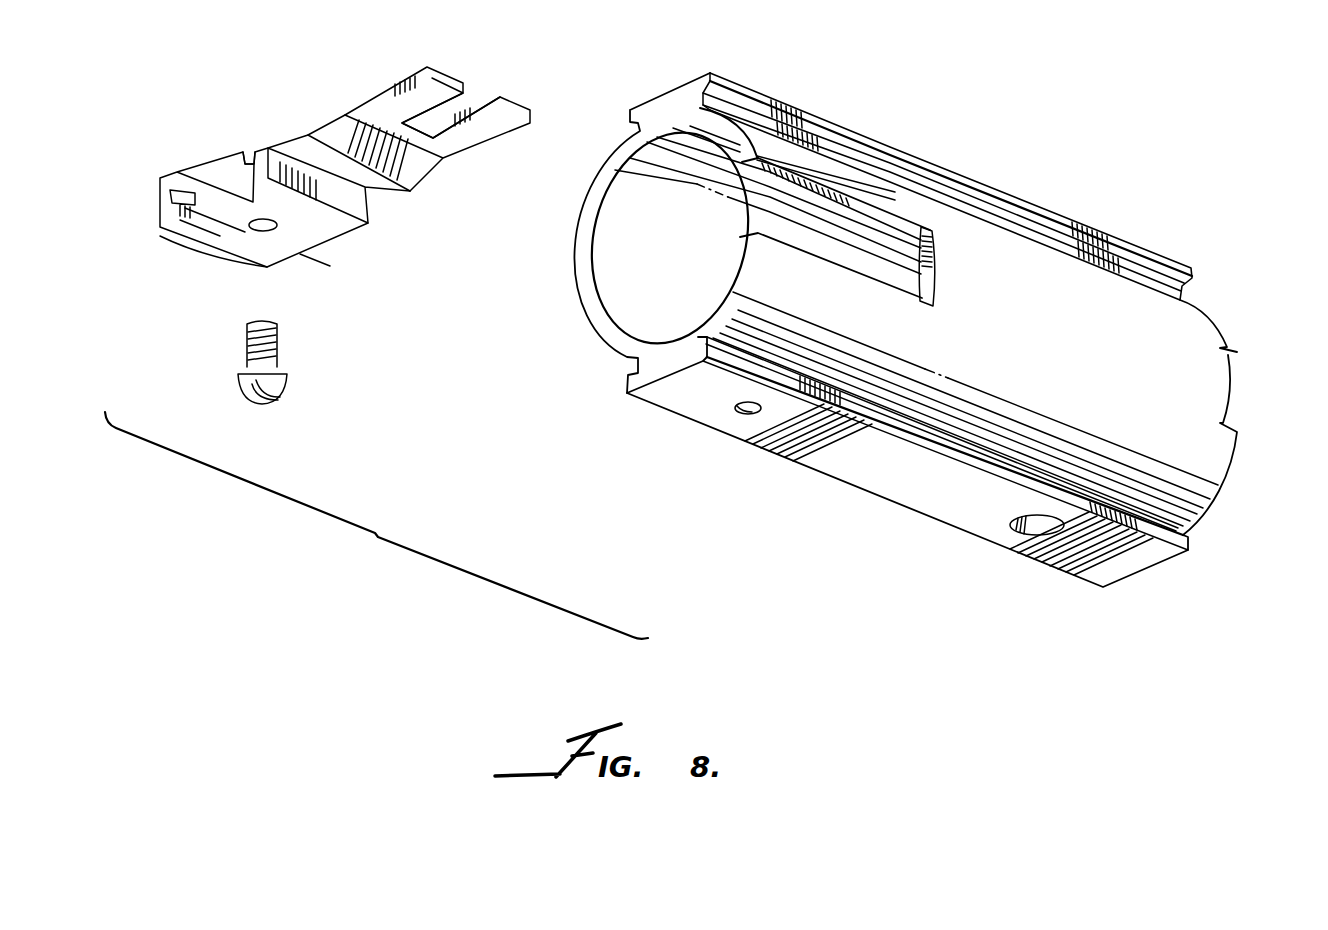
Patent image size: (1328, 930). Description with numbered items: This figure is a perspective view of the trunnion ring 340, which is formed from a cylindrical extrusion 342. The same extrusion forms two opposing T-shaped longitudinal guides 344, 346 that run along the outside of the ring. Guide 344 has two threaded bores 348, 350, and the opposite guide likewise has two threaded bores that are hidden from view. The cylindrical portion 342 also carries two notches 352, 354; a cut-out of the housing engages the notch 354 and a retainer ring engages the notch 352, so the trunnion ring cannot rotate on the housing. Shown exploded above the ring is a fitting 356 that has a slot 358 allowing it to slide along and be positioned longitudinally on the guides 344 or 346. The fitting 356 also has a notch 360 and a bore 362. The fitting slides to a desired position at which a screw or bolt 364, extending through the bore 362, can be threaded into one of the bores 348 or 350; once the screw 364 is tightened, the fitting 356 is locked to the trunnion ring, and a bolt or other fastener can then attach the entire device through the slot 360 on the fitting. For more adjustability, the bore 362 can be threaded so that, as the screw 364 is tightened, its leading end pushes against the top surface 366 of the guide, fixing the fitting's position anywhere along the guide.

The trunnion ring 340 is at (945, 309).
The cylindrical extrusion 342 is at (872, 392).
The T-shaped longitudinal guide 344 is at (1133, 246).
The T-shaped longitudinal guide 346 is at (1126, 570).
The threaded bore 348 is at (742, 413).
The threaded bore 350 is at (1037, 531).
The notch 352 is at (934, 270).
The notch 354 is at (1232, 398).
The fitting 356 is at (318, 132).
The slot 358 is at (243, 165).
The notch 360 is at (440, 140).
The bore 362 is at (272, 231).
The screw 364 is at (283, 381).
The top surface 366 is at (803, 452).